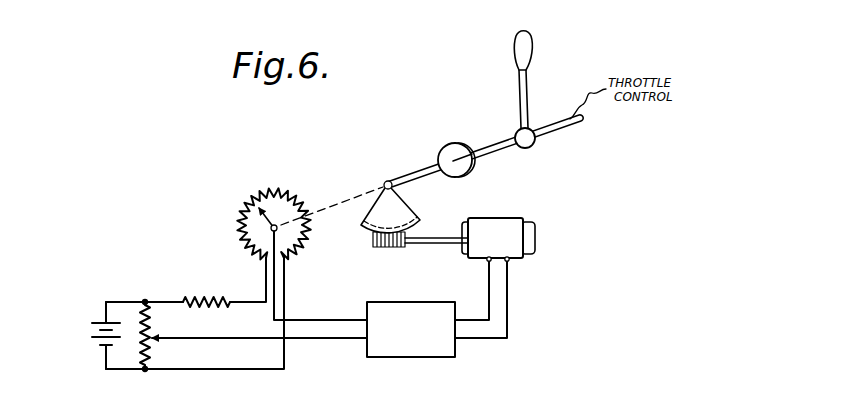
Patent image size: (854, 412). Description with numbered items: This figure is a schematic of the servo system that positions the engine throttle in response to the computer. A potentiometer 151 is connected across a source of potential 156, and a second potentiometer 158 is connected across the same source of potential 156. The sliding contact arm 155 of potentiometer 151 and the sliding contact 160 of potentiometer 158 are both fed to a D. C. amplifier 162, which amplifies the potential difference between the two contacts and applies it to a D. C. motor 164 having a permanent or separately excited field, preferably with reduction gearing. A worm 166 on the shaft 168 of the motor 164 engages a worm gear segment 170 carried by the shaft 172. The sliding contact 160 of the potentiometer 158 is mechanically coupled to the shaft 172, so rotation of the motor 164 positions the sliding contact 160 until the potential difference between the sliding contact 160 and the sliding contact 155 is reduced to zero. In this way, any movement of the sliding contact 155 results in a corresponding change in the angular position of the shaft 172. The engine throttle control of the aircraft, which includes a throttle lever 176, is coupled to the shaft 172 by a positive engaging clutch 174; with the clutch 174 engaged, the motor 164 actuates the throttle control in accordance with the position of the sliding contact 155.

The potentiometer 151 is at (157, 322).
The sliding contact arm 155 is at (172, 341).
The source of potential 156 is at (92, 338).
The second potentiometer 158 is at (297, 191).
The sliding contact 160 is at (238, 229).
The D. C. amplifier 162 is at (436, 302).
The D. C. motor 164 is at (511, 219).
The worm 166 is at (383, 248).
The shaft 168 is at (432, 243).
The worm gear segment 170 is at (410, 206).
The shaft 172 is at (410, 173).
The positive engaging clutch 174 is at (466, 144).
The throttle lever 176 is at (527, 46).